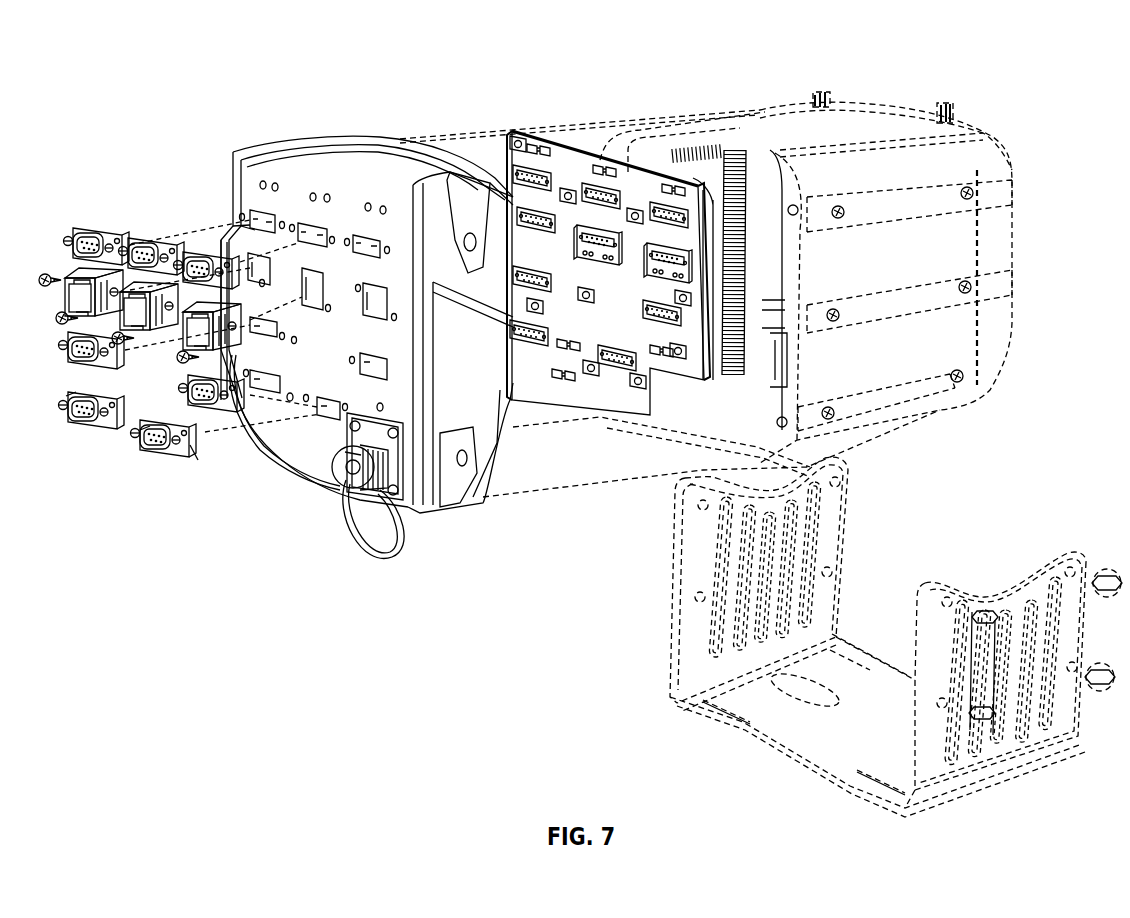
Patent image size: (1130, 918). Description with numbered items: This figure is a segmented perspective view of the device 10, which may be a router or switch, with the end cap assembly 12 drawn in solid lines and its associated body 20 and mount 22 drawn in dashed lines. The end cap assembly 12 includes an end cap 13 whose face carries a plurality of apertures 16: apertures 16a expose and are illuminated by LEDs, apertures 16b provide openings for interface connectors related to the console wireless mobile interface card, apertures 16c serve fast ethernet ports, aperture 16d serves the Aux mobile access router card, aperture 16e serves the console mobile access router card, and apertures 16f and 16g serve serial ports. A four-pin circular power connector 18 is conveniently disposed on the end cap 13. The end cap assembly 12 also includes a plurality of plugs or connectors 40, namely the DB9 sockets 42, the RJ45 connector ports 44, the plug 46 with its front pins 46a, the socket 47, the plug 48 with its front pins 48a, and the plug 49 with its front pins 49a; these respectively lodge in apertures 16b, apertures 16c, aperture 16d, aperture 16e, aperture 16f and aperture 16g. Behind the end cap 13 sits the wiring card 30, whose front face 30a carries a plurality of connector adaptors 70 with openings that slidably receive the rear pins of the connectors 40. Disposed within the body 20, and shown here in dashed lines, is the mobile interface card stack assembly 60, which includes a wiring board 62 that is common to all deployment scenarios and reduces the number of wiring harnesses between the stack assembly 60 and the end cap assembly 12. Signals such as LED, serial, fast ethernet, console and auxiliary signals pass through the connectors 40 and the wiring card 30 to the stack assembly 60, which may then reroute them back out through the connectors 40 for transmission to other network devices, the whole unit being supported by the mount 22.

The device 10 is at (112, 86).
The end cap assembly 12 is at (261, 137).
The end cap 13 is at (489, 428).
The apertures 16 is at (219, 202).
The apertures for LEDs 16a is at (273, 184).
The apertures for console WMIC interface connectors 16b is at (376, 242).
The apertures for fast ethernet interface connectors 16c is at (270, 268).
The aperture for Aux MARC interface connector 16d is at (263, 328).
The aperture for console MARC interface connector 16e is at (364, 364).
The aperture for serial port interface connector 16f is at (268, 393).
The aperture for serial port interface connector 16g is at (322, 391).
The power connector 18 is at (318, 495).
The body 20 is at (783, 130).
The mount 22 is at (867, 648).
The wiring card 30 is at (564, 164).
The front face 30a is at (621, 332).
The plugs or connectors 40 is at (78, 221).
The sockets 42 is at (96, 238).
The connector ports 44 is at (85, 284).
The plug 46 is at (78, 358).
The front pins 46a is at (81, 402).
The socket 47 is at (206, 407).
The plug 48 is at (130, 412).
The front pins 48a is at (88, 428).
The plug 49 is at (196, 456).
The front pins 49a is at (155, 453).
The mobile interface card (MIC) stack assembly 60 is at (724, 178).
The wiring board 62 is at (772, 300).
The connector adaptors 70 is at (506, 156).